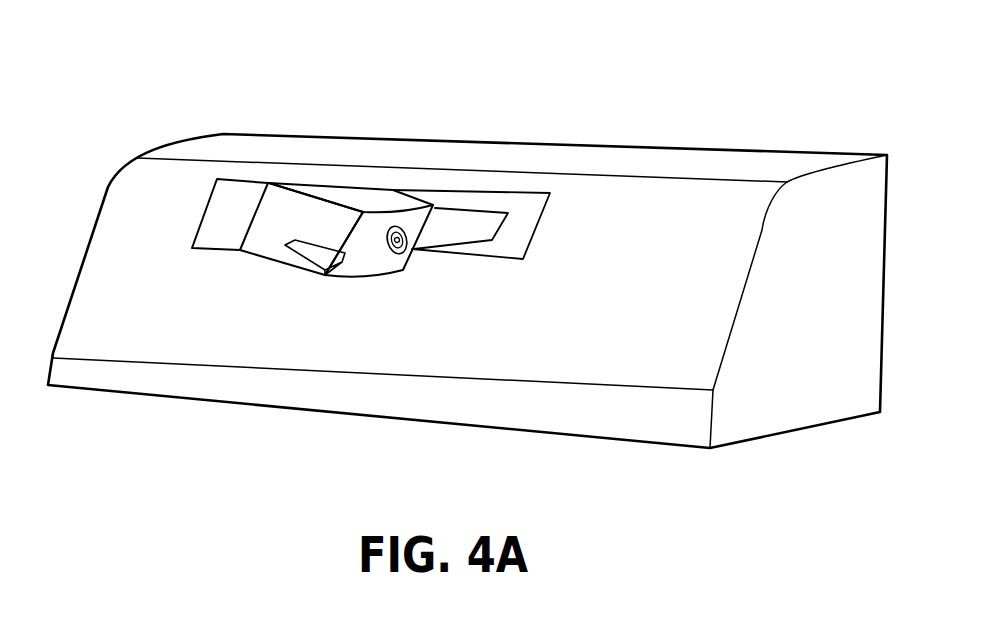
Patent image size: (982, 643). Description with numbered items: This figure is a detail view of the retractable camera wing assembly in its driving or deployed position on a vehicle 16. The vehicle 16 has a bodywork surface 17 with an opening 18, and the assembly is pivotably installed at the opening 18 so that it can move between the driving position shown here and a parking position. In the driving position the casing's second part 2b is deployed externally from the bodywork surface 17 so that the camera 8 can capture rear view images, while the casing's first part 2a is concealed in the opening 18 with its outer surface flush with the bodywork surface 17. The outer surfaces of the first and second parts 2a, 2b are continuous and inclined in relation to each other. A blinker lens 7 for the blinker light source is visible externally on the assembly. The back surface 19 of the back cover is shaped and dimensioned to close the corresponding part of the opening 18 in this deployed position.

The vehicle 16 is at (467, 224).
The bodywork surface 17 is at (630, 208).
The first part of the casing 2a is at (231, 207).
The second part of the casing 2b is at (357, 200).
The blinker lens 7 is at (320, 255).
The camera 8 is at (400, 247).
The opening 18 is at (521, 190).
The back surface 19 is at (450, 213).